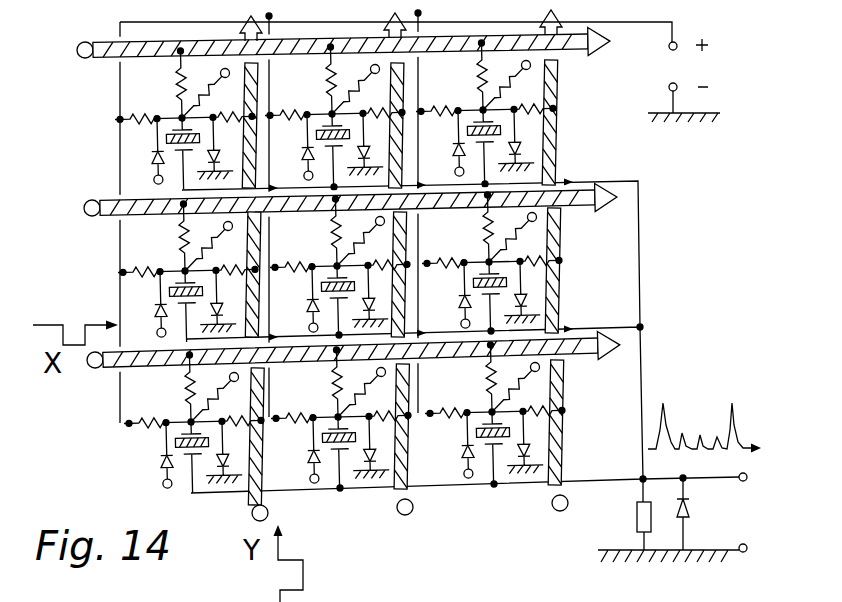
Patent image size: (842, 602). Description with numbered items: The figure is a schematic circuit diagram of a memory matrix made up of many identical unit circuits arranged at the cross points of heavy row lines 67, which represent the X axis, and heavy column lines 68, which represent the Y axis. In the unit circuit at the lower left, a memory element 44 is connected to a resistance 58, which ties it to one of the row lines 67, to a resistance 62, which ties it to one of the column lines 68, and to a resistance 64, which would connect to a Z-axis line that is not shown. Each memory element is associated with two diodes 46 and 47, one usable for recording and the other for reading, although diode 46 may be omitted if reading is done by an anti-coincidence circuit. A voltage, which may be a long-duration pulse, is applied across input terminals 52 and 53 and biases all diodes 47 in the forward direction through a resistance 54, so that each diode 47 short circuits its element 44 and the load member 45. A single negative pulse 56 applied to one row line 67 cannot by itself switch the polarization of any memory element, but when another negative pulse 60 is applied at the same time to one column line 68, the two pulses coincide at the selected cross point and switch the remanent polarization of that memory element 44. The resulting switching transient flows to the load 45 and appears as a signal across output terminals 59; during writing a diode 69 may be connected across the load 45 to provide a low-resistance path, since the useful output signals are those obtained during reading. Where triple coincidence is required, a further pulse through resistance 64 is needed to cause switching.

The memory element 44 is at (189, 463).
The load member 45 is at (636, 522).
The diode 46 is at (151, 455).
The diode 47 is at (230, 452).
The input terminal 52 is at (669, 46).
The input terminal 53 is at (669, 90).
The resistance 54 is at (142, 438).
The negative pulse 56 is at (68, 326).
The resistance 58 is at (173, 387).
The output terminals 59 is at (745, 487).
The negative pulse 60 is at (305, 568).
The resistance 62 is at (239, 408).
The resistance 64 is at (215, 394).
The row line 67 is at (117, 369).
The column line 68 is at (254, 506).
The diode 69 is at (690, 503).